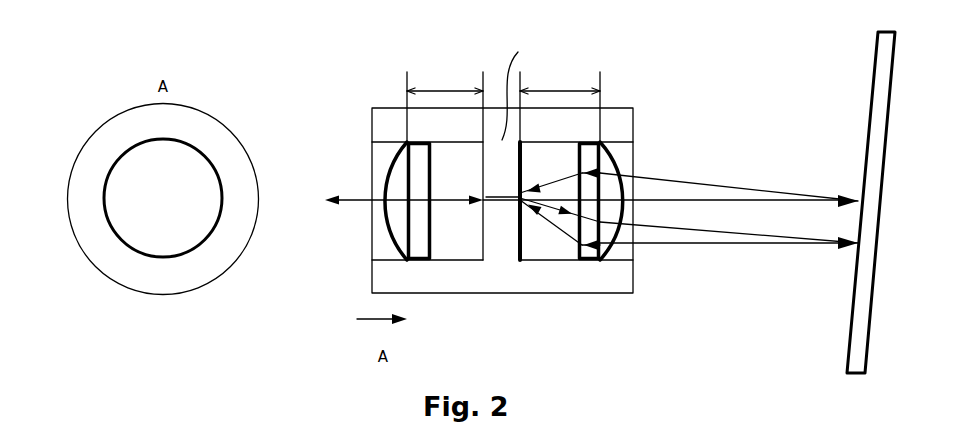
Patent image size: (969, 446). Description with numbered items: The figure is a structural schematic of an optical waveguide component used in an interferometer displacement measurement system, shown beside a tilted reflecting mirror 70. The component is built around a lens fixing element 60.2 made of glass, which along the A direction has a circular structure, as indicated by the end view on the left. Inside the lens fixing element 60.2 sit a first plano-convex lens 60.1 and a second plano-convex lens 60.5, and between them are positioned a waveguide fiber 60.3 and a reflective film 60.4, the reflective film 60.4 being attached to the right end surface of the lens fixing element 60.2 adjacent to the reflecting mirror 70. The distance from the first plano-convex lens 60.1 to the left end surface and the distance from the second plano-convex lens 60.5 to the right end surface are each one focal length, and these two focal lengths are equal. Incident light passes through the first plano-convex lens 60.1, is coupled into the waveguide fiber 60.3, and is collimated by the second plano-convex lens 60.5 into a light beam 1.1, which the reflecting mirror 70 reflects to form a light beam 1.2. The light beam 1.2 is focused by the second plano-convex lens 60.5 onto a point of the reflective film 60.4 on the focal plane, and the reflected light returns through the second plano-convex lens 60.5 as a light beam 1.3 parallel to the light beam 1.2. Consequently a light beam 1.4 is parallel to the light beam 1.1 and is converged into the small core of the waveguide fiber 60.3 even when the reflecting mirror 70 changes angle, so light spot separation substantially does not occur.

The first plano-convex lens 60.1 is at (125, 215).
The lens fixing element 60.2 is at (90, 176).
The waveguide fiber 60.3 is at (502, 207).
The reflective film 60.4 is at (515, 247).
The second plano-convex lens 60.5 is at (622, 165).
The reflecting mirror 70 is at (872, 82).
The light beam 1.1 is at (733, 201).
The light beam 1.2 is at (783, 191).
The light beam 1.3 is at (717, 232).
The light beam 1.4 is at (787, 246).